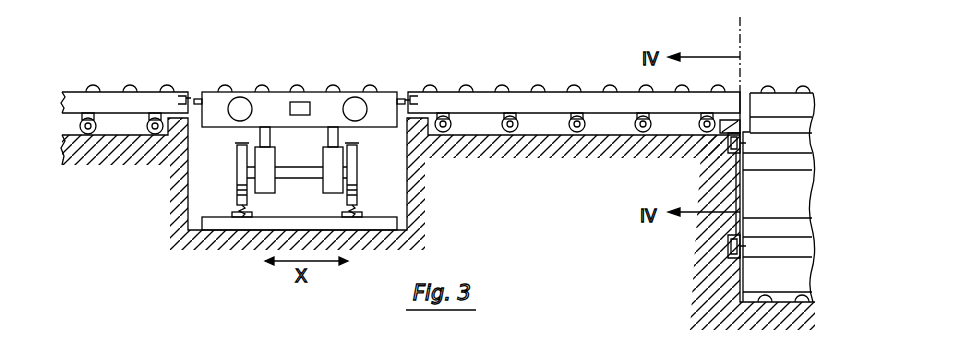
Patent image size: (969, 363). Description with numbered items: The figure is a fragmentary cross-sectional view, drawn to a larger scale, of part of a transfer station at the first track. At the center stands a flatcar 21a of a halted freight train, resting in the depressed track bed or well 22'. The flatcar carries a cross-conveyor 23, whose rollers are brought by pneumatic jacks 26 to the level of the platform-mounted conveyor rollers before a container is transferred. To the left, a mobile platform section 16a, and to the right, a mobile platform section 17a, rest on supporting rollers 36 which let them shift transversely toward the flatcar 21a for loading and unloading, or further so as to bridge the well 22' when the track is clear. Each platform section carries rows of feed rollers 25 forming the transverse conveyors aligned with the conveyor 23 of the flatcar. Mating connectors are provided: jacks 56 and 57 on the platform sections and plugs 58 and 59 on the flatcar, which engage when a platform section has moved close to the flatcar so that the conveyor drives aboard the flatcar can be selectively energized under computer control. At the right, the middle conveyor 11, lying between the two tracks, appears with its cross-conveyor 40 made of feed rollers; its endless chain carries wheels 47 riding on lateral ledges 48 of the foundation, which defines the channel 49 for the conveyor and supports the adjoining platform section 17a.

The middle conveyor 11 is at (771, 78).
The platform section 16a is at (108, 100).
The platform section 17a is at (556, 106).
The flatcar 21a is at (378, 107).
The well 22' is at (345, 186).
The cross-conveyor 23 is at (296, 85).
The feed rollers 25 is at (502, 84).
The pneumatic jacks 26 is at (327, 160).
The supporting rollers 36 is at (577, 130).
The cross-conveyor 40 is at (765, 284).
The wheels 47 is at (736, 148).
The lateral ledges 48 is at (730, 258).
The channel 49 is at (735, 222).
The connector 56 is at (180, 95).
The connector 57 is at (418, 97).
The connector 58 is at (200, 99).
The connector 59 is at (400, 99).